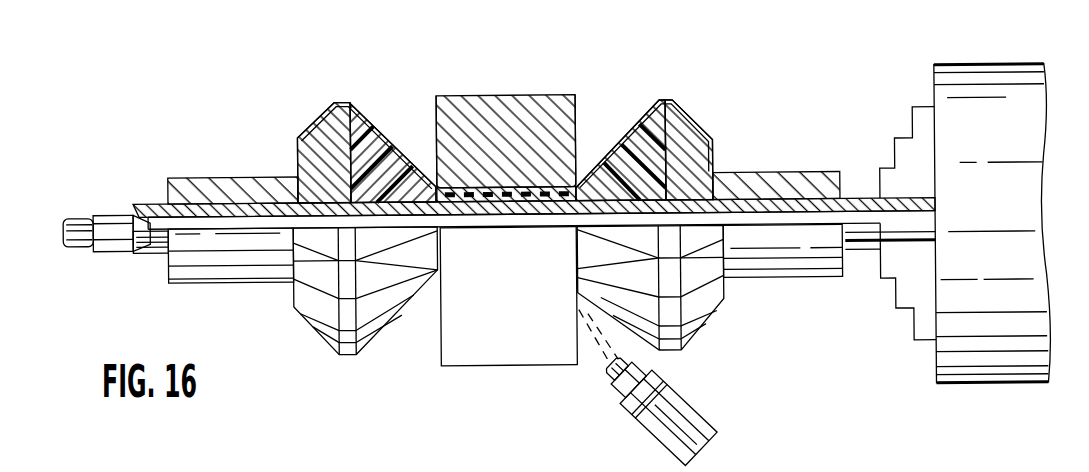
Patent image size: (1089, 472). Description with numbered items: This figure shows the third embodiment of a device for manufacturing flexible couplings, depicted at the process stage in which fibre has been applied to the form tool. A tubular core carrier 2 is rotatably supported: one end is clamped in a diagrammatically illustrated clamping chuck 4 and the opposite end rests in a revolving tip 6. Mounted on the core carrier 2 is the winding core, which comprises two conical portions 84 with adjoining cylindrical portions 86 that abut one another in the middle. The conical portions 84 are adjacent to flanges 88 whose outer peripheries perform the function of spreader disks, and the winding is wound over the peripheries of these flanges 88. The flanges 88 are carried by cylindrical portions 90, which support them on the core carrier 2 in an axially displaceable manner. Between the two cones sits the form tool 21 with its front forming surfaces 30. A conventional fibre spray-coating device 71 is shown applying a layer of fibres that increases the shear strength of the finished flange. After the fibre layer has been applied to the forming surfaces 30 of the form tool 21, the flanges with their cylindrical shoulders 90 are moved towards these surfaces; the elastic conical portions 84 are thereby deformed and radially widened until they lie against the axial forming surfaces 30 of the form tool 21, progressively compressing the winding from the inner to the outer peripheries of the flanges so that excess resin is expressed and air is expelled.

The core carrier 2 is at (861, 202).
The clamping chuck 4 is at (945, 355).
The revolving tip 6 is at (111, 214).
The form tool 21 is at (505, 88).
The forming surfaces 30 is at (434, 129).
The fibre spray-coating device 71 is at (683, 421).
The conical portions 84 is at (378, 127).
The cylindrical portions 86 is at (516, 204).
The flanges 88 is at (323, 127).
The cylindrical portions 90 is at (203, 186).